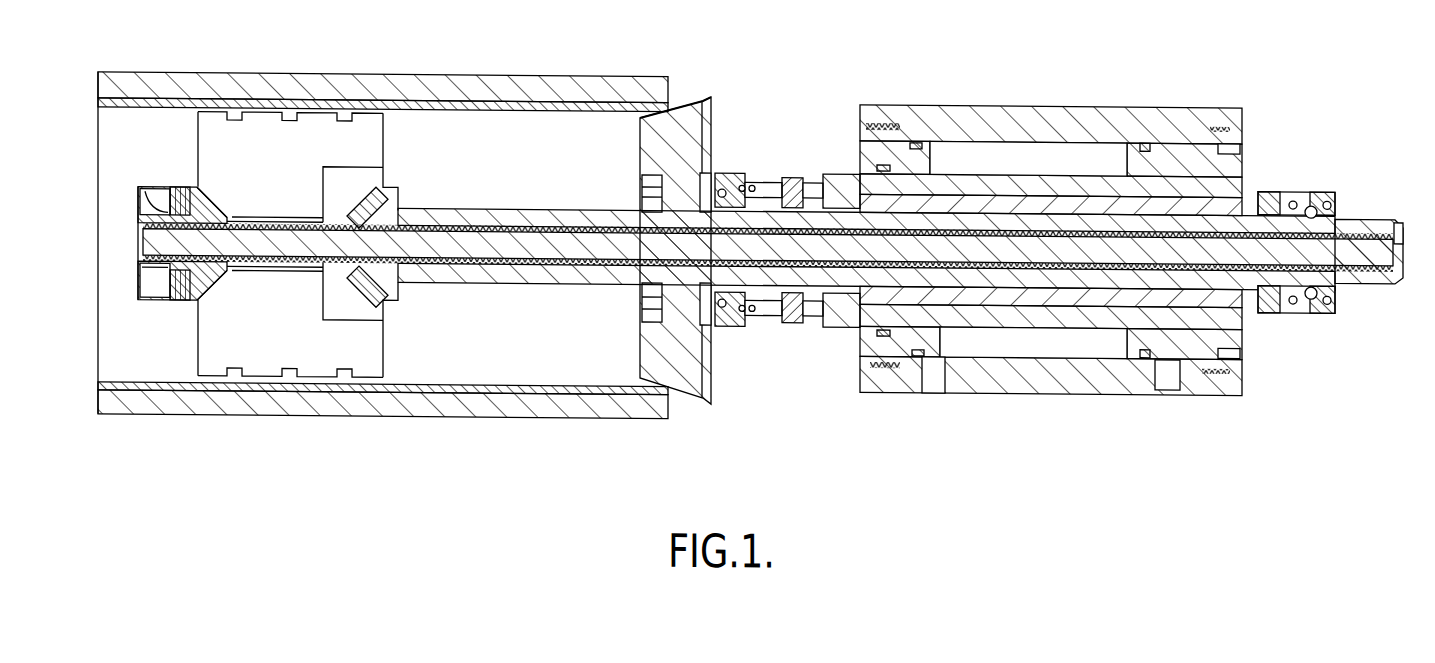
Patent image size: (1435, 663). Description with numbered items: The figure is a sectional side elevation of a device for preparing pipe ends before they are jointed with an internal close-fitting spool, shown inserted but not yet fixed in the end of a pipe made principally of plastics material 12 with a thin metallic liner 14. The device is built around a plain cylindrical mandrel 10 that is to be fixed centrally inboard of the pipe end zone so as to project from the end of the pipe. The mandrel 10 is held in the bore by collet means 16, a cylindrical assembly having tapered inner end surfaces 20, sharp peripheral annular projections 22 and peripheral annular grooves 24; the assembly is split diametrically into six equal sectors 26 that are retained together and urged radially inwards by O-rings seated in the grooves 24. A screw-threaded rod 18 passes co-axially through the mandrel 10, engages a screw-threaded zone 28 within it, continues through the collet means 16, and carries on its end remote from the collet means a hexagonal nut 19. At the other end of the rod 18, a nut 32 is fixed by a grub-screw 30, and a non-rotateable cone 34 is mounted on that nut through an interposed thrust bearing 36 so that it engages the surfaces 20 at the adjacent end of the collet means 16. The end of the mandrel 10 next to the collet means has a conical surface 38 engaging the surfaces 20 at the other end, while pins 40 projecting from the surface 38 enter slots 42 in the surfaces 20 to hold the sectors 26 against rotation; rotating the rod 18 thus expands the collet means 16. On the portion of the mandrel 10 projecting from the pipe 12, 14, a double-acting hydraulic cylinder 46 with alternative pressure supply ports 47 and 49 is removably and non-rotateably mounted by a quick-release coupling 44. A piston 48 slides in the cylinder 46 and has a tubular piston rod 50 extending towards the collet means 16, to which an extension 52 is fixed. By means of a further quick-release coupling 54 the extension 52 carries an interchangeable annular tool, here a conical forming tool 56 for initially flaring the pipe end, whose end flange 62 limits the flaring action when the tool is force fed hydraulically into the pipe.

The mandrel 10 is at (503, 210).
The plastics material 12 is at (490, 396).
The metallic liner 14 is at (562, 385).
The collet means 16 is at (440, 331).
The screw-threaded rod 18 is at (1024, 240).
The hexagonal nut 19 is at (1372, 278).
The tapered inner end surfaces 20 is at (165, 186).
The sharp peripheral annular projections 22 is at (289, 107).
The peripheral annular grooves 24 is at (228, 380).
The sectors 26 is at (380, 144).
The screw-threaded zone 28 is at (410, 228).
The grub-screw 30 is at (155, 261).
The nut 32 is at (139, 196).
The non-rotateable cone 34 is at (205, 268).
The thrust bearing 36 is at (173, 290).
The conical surface 38 is at (372, 180).
The pins 40 is at (340, 207).
The slots 42 is at (400, 381).
The quick-release coupling 44 is at (1282, 181).
The double-acting hydraulic cylinder 46 is at (985, 112).
The pressure supply port 47 is at (1168, 360).
The piston 48 is at (1105, 133).
The pressure supply port 49 is at (940, 360).
The tubular piston rod 50 is at (845, 306).
The extension 52 is at (808, 193).
The quick-release coupling 54 is at (732, 184).
The conical forming tool 56 is at (697, 354).
The end flange 62 is at (712, 94).